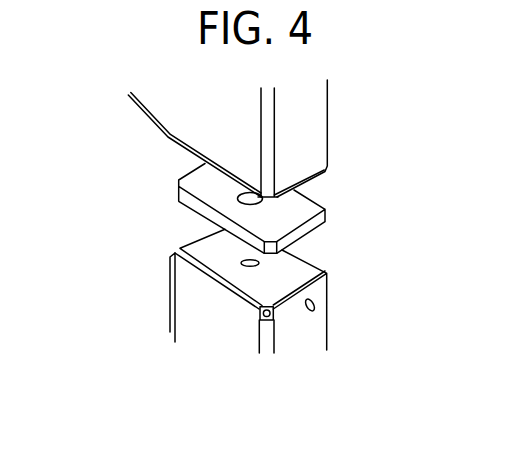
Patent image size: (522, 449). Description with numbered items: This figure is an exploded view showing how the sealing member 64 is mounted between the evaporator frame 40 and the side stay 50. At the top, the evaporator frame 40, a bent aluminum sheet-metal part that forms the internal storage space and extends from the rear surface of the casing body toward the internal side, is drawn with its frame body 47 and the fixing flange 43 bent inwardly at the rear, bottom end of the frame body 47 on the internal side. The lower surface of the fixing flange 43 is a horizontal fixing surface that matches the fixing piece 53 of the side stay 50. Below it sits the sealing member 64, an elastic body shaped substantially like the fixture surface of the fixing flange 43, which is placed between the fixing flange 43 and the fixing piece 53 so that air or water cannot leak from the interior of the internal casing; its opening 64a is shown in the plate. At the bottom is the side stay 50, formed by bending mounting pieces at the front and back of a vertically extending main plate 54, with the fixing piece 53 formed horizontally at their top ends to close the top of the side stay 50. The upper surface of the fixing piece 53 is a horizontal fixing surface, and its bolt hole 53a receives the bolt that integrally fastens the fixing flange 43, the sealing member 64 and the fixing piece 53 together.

The evaporator frame 40 is at (328, 110).
The fixing flange 43 is at (312, 168).
The frame body 47 is at (181, 104).
The sealing member 64 is at (250, 205).
The hole of plate 64a is at (243, 194).
The fixing piece 53 is at (243, 285).
The bolt hole 53a is at (248, 262).
The main plate 54 is at (187, 312).
The side stay 50 is at (249, 286).